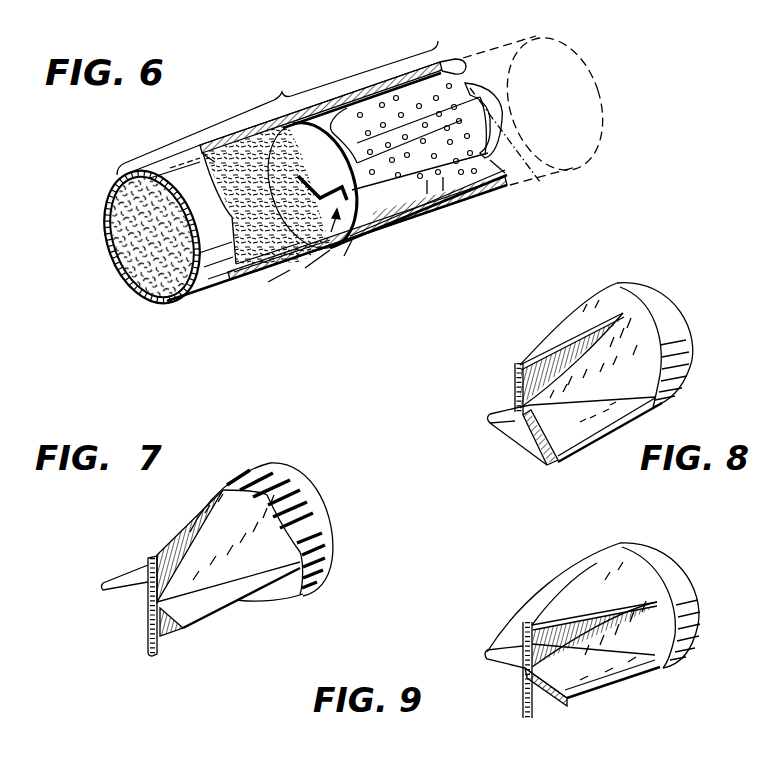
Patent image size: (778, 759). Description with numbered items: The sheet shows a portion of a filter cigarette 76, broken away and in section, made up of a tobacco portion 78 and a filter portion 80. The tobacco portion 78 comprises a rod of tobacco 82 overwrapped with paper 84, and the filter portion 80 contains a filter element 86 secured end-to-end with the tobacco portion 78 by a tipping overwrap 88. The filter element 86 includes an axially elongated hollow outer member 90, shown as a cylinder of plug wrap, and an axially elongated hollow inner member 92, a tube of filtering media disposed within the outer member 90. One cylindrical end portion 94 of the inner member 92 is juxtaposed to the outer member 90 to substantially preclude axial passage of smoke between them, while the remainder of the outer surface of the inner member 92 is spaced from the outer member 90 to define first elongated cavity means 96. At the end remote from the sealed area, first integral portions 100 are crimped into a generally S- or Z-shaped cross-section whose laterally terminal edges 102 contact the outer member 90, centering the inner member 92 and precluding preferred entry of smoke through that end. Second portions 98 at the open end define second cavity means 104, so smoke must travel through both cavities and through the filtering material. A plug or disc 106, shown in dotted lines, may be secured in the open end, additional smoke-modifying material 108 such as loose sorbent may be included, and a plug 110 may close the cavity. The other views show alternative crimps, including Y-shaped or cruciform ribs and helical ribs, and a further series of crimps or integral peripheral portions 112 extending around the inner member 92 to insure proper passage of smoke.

In FIG. 6, the filter cigarette portion 76 is at (283, 88).
In FIG. 6, the tobacco portion 78 is at (201, 126).
In FIG. 6, the filter portion 80 is at (366, 72).
In FIG. 6, the rod of tobacco 82 is at (122, 256).
In FIG. 6, the paper 84 is at (145, 300).
In FIG. 6, the filter element 86 is at (504, 191).
In FIG. 6, the tipping overwrap 88 is at (385, 246).
In FIG. 6, the outer member 90 is at (387, 217).
In FIG. 6, the inner member 92 is at (372, 133).
In FIG. 7, the inner member 92 is at (313, 481).
In FIG. 8, the inner member 92 is at (594, 462).
In FIG. 9, the inner member 92 is at (562, 562).
In FIG. 6, the end portion 94 is at (448, 60).
In FIG. 6, the first cavity means 96 is at (332, 238).
In FIG. 6, the second portions 98 is at (425, 120).
In FIG. 6, the first integral portions 100 is at (305, 268).
In FIG. 7, the first integral portions 100 is at (133, 573).
In FIG. 8, the first integral portions 100 is at (557, 342).
In FIG. 9, the first integral portions 100 is at (550, 620).
In FIG. 6, the laterally terminal edges 102 is at (270, 282).
In FIG. 7, the laterally terminal edges 102 is at (142, 638).
In FIG. 8, the laterally terminal edges 102 is at (490, 414).
In FIG. 9, the laterally terminal edges 102 is at (523, 692).
In FIG. 6, the second cavity means 104 is at (500, 136).
In FIG. 6, the plug or disc 106 is at (538, 181).
In FIG. 6, the additional smoke-modifying material 108 is at (430, 212).
In FIG. 6, the plug 110 is at (606, 75).
In FIG. 7, the further integral peripheral portions 112 is at (325, 503).